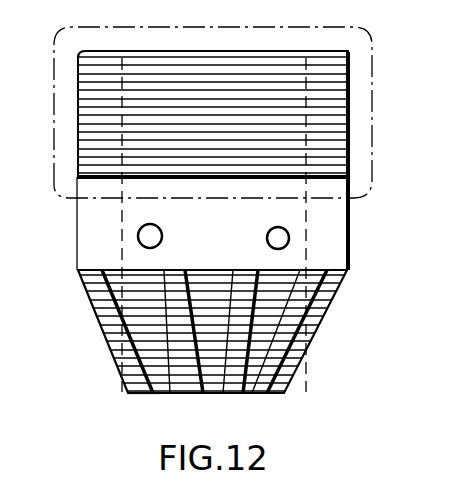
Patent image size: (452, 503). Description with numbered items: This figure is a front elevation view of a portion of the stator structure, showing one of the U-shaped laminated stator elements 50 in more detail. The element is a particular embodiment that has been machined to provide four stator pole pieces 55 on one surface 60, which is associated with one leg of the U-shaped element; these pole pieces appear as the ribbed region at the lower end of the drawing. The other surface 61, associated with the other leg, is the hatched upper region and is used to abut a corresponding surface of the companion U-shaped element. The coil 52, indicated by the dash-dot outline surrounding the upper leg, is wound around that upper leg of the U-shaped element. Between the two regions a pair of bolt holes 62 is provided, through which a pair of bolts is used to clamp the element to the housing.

The plug body 50 is at (364, 214).
The coil 52 is at (350, 98).
The stator pole pieces 55 is at (187, 386).
The surface 60 is at (247, 388).
The surface 61 is at (197, 78).
The bolt holes 62 is at (266, 240).